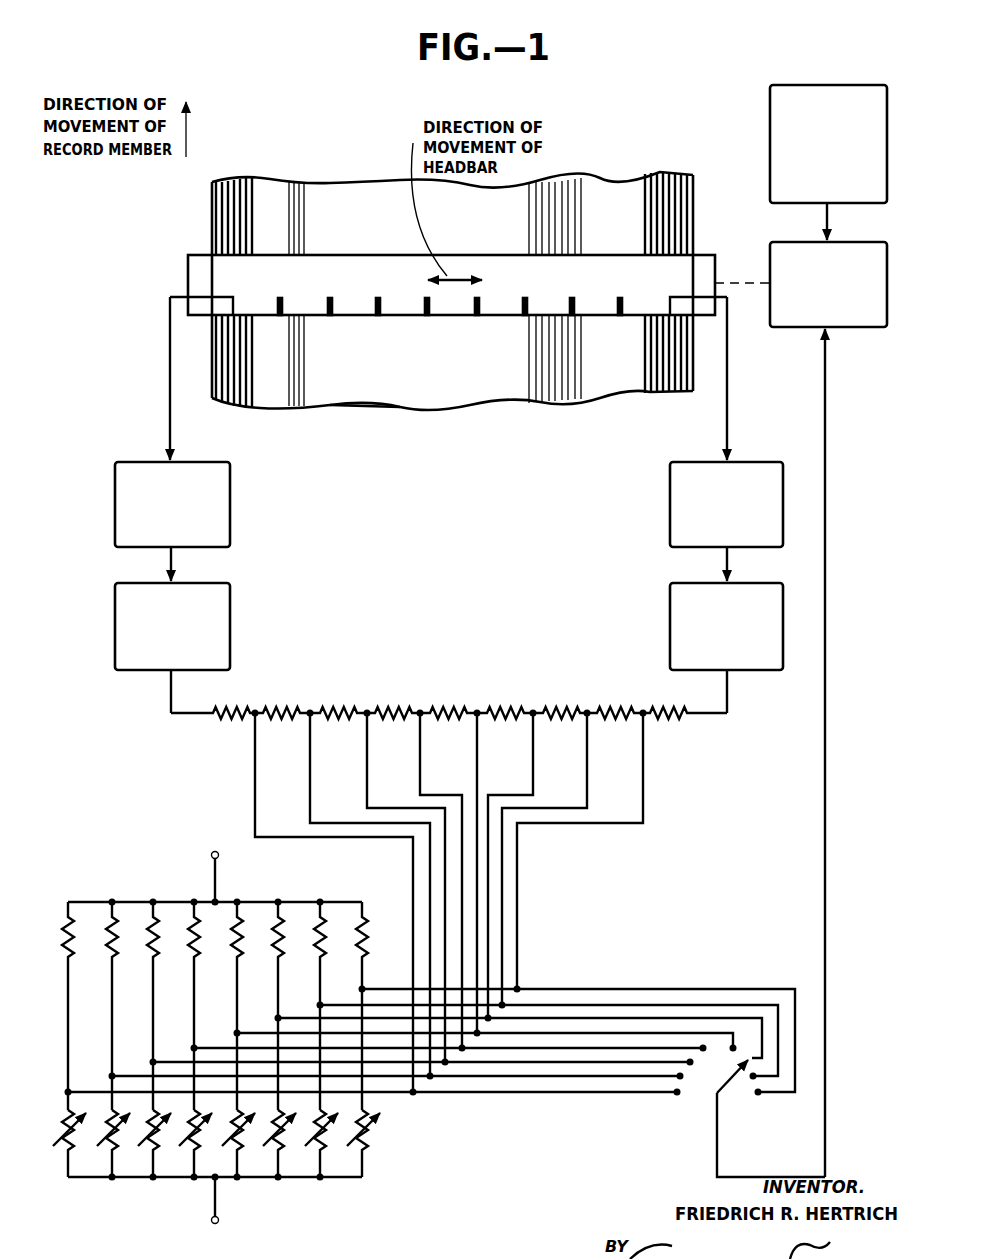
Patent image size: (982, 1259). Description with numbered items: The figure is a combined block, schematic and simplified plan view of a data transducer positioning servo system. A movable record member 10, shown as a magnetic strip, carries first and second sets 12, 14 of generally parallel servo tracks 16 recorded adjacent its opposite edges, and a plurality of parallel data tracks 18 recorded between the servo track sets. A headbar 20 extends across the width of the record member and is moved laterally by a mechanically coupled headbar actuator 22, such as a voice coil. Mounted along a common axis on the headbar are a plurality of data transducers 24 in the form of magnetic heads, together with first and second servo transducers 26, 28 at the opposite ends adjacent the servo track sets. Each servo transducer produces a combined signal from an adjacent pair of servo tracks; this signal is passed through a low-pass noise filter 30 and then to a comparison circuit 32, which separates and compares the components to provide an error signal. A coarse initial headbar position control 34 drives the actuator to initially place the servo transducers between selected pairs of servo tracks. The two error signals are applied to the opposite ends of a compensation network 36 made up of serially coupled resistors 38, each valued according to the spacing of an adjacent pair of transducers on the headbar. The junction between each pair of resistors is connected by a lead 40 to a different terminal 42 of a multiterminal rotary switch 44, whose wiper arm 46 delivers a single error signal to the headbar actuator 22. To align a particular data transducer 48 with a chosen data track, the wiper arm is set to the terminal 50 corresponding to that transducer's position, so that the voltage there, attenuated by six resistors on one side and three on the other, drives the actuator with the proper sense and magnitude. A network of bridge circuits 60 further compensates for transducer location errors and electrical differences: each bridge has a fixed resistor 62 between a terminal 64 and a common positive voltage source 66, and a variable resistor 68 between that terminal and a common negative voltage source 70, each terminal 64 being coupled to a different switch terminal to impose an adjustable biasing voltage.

The record member 10 is at (697, 392).
The first servo track set 12 is at (236, 407).
The second servo track set 14 is at (679, 397).
The servo tracks 16 is at (231, 378).
The data tracks 18 is at (437, 398).
The headbar 20 is at (188, 263).
The headbar actuator 22 is at (770, 255).
The data transducers 24 is at (336, 300).
The first servo transducer 26 is at (242, 300).
The second servo transducer 28 is at (668, 300).
The noise filter 30 is at (232, 478).
The comparison circuit 32 is at (232, 598).
The coarse initial headbar position control 34 is at (770, 99).
The compensation network 36 is at (454, 704).
The resistors 38 is at (288, 712).
The lead 40 is at (662, 762).
The switch terminals 42 is at (687, 1075).
The rotary switch 44 is at (752, 1108).
The wiper arm 46 is at (732, 1077).
The selected data transducer 48 is at (530, 300).
The terminal 50 is at (534, 712).
The bridge circuits 60 is at (336, 1190).
The fixed resistor 62 is at (199, 948).
The bridge terminal 64 is at (113, 1073).
The positive voltage source 66 is at (211, 856).
The variable resistor 68 is at (114, 1116).
The negative voltage source 70 is at (211, 1221).